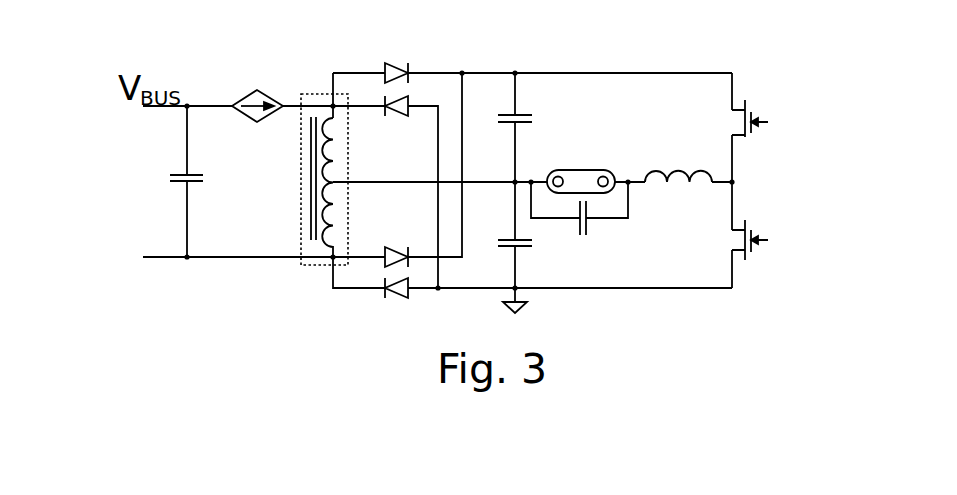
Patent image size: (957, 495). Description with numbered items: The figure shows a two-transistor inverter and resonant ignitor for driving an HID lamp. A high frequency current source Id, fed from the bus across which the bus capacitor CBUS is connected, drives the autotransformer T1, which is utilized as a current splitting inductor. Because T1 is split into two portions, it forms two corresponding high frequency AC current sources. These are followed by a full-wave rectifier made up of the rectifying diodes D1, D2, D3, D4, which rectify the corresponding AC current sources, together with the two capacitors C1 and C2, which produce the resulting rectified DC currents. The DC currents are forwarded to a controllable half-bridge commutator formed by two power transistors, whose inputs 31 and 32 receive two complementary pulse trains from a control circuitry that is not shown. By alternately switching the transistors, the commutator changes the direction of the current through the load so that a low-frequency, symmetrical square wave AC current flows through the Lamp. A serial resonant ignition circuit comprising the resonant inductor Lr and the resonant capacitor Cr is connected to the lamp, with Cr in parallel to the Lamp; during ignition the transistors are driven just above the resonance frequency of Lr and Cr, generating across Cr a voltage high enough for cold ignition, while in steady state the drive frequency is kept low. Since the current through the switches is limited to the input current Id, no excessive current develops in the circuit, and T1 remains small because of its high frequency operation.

The commutator input 31 is at (770, 127).
The commutator input 32 is at (770, 245).
The high frequency current source Id is at (258, 87).
The bus capacitor CBUS is at (216, 181).
The autotransformer T1 is at (307, 179).
The rectifying diode D1 is at (382, 56).
The rectifying diode D2 is at (383, 124).
The rectifying diode D3 is at (383, 237).
The rectifying diode D4 is at (383, 305).
The capacitor C1 is at (502, 127).
The capacitor C2 is at (502, 242).
The resonant capacitor Cr is at (579, 221).
The lamp Lamp is at (579, 164).
The resonant inductor Lr is at (678, 159).